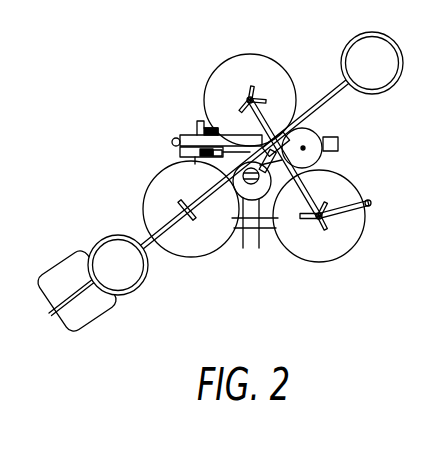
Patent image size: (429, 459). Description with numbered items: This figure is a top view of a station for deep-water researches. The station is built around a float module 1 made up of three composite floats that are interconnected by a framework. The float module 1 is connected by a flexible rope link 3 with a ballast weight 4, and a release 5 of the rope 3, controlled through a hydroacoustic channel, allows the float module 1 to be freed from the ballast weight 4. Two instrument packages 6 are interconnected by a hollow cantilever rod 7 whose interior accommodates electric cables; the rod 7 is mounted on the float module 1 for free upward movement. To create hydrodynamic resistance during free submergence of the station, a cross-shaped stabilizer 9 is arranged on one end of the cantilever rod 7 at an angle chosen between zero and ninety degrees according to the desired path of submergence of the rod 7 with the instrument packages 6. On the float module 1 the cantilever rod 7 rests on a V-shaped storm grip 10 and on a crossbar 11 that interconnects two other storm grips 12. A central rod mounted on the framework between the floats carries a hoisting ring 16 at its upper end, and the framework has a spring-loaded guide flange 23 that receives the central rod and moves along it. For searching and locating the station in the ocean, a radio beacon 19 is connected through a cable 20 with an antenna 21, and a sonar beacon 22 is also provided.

The float module 1 is at (249, 56).
The flexible rope link 3 is at (172, 143).
The ballast weight 4 is at (180, 157).
The release 5 is at (198, 126).
The instrument package 6 is at (110, 242).
The hollow cantilever rod 7 is at (328, 102).
The cross-shaped stabilizer 9 is at (98, 305).
The V-shaped storm grip 10 is at (177, 210).
The crossbar 11 is at (294, 175).
The storm grip 12 is at (240, 87).
The hoisting ring 16 is at (243, 248).
The radio beacon 19 is at (320, 126).
The cable 20 is at (303, 148).
The antenna 21 is at (374, 204).
The sonar beacon 22 is at (345, 138).
The guide flange 23 is at (260, 248).